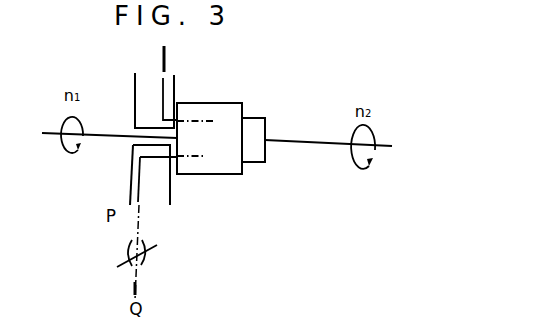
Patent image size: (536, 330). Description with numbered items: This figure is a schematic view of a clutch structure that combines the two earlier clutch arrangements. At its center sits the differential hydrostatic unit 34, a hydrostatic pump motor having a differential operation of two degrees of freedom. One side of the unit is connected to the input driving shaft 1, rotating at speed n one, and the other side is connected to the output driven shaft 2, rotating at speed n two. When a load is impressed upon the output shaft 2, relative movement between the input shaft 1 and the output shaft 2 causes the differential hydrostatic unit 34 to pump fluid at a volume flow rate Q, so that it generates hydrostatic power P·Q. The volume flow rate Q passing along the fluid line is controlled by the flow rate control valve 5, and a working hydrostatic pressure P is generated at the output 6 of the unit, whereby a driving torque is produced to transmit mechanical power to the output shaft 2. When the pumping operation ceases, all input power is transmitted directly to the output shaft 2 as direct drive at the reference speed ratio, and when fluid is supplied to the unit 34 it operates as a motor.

The input driving shaft 1 is at (108, 131).
The output driven shaft 2 is at (294, 141).
The differential hydrostatic unit 34 is at (206, 102).
The flow rate control valve 5 is at (144, 274).
The output of the differential-type hydrostatic pump 6 is at (140, 237).